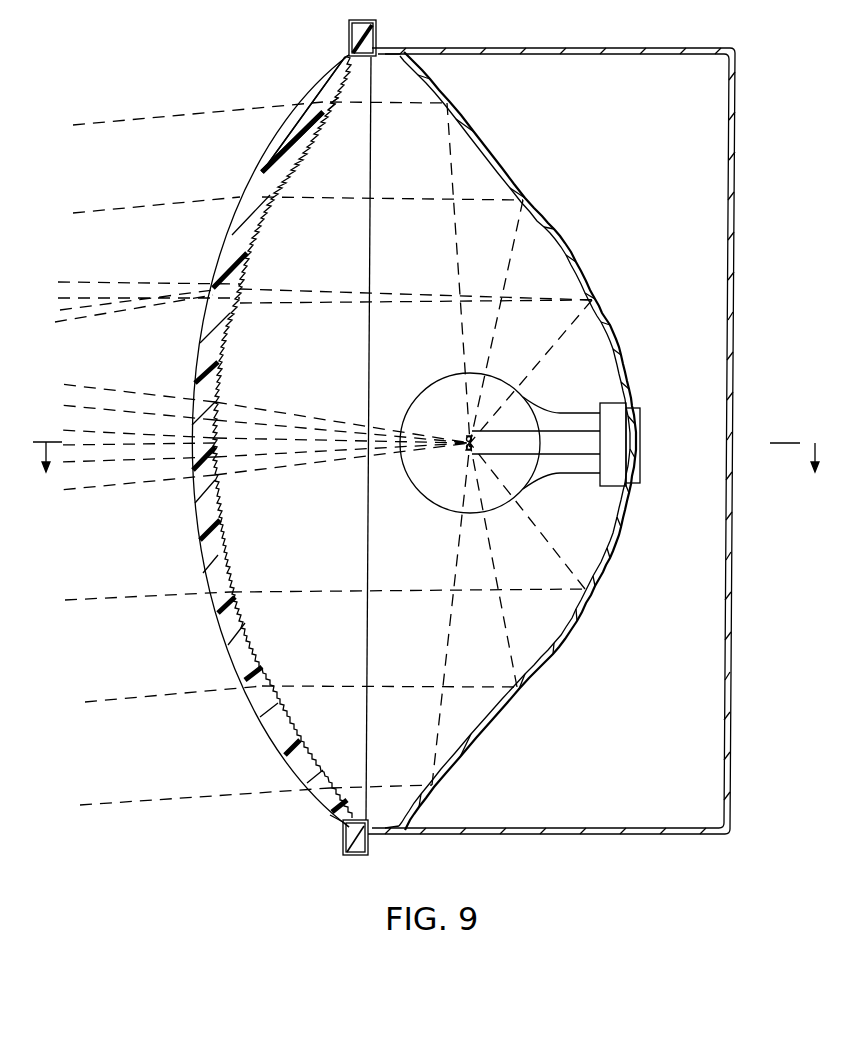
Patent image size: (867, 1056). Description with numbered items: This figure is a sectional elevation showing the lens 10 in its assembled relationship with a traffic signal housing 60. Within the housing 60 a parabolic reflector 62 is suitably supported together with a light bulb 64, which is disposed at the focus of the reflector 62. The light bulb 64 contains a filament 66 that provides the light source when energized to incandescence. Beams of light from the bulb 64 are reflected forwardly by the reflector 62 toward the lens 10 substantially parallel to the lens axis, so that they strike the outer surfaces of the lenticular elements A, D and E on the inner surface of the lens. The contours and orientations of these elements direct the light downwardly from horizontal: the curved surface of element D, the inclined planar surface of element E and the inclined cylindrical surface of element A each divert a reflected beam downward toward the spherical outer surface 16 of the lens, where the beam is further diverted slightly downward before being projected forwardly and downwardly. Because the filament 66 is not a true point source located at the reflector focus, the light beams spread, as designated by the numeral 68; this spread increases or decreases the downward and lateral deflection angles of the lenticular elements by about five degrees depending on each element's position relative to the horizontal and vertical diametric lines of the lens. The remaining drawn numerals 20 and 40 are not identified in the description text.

The lens 10 is at (318, 84).
The spherical outer surface 16 is at (195, 362).
The prism facets 20 is at (265, 651).
The lamp assembly 40 is at (752, 148).
The traffic signal housing 60 is at (590, 47).
The parabolic reflector 62 is at (572, 242).
The light bulb 64 is at (540, 413).
The filament 66 is at (445, 499).
The spreading of the light beams 68 is at (306, 468).
The lenticular element A is at (312, 763).
The lenticular element D is at (325, 776).
The lenticular element E is at (335, 785).